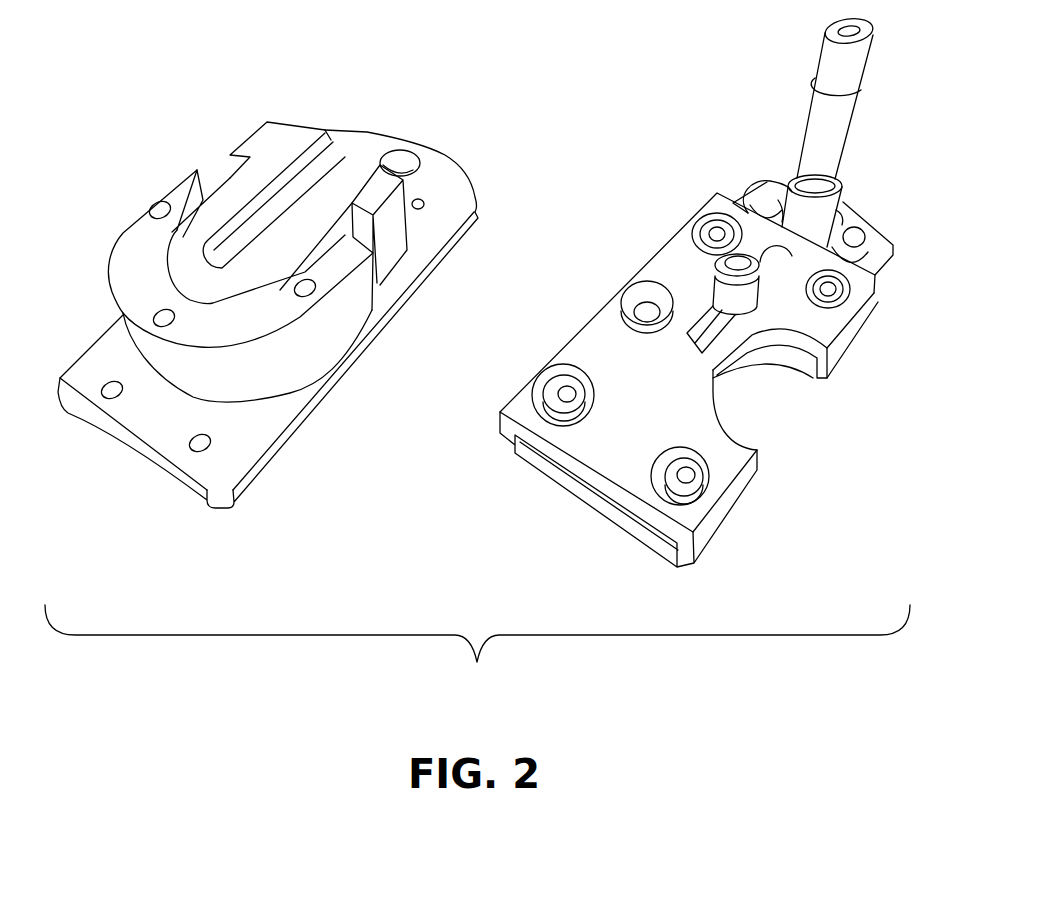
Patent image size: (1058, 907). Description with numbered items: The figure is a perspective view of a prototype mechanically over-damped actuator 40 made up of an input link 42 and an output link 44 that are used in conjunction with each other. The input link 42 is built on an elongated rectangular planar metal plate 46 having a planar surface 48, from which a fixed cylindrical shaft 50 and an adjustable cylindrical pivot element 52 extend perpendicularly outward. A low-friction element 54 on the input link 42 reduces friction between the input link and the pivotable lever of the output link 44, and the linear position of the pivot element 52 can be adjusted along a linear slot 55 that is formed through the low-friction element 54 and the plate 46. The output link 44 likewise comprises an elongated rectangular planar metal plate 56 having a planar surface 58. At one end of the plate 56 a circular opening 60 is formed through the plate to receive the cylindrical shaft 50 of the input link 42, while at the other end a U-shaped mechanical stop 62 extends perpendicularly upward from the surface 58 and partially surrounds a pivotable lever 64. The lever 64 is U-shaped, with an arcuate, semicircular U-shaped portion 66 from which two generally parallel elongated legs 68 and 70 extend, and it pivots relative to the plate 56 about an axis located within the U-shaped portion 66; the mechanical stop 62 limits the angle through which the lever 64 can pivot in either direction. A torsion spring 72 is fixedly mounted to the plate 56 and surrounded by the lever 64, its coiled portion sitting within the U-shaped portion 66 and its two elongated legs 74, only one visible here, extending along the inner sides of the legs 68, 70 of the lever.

The mechanically over-damped actuator 40 is at (477, 652).
The input link 42 is at (928, 167).
The output link 44 is at (523, 155).
The planar metal plate 46 is at (920, 278).
The planar surface 48 is at (763, 193).
The fixed cylindrical shaft 50 is at (795, 93).
The adjustable cylindrical pivot element 52 is at (722, 295).
The low-friction element 54 is at (728, 503).
The linear slot 55 is at (690, 335).
The planar metal plate 56 is at (283, 476).
The planar surface 58 is at (140, 426).
The circular opening 60 is at (415, 140).
The U-shaped mechanical stop 62 is at (99, 258).
The pivotable lever 64 is at (280, 163).
The U-shaped portion 66 is at (200, 285).
The leg 68 is at (290, 253).
The leg 70 is at (230, 183).
The torsion spring 72 is at (335, 148).
The legs 74 is at (290, 200).